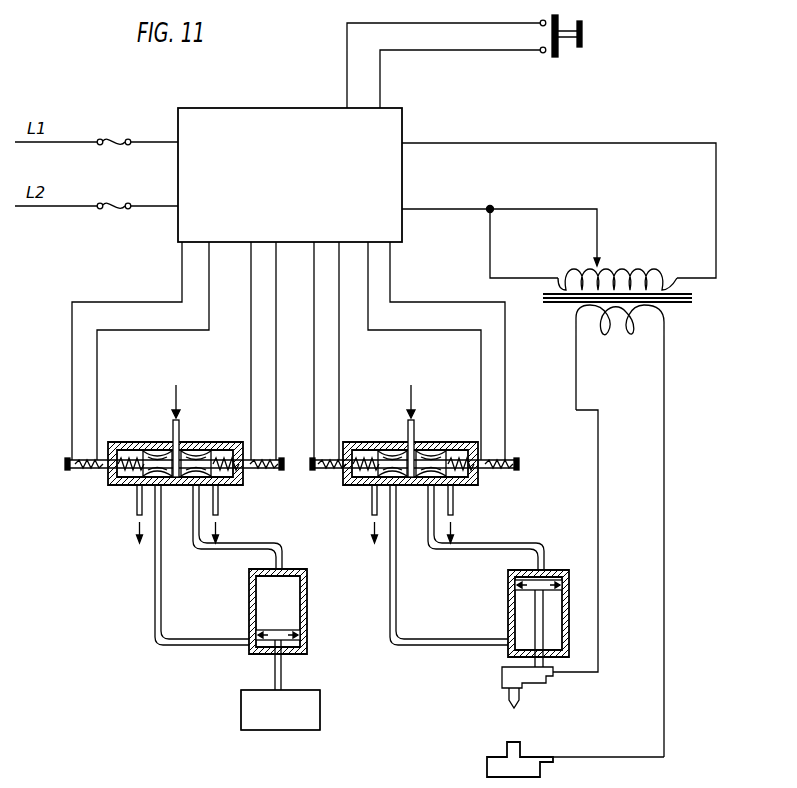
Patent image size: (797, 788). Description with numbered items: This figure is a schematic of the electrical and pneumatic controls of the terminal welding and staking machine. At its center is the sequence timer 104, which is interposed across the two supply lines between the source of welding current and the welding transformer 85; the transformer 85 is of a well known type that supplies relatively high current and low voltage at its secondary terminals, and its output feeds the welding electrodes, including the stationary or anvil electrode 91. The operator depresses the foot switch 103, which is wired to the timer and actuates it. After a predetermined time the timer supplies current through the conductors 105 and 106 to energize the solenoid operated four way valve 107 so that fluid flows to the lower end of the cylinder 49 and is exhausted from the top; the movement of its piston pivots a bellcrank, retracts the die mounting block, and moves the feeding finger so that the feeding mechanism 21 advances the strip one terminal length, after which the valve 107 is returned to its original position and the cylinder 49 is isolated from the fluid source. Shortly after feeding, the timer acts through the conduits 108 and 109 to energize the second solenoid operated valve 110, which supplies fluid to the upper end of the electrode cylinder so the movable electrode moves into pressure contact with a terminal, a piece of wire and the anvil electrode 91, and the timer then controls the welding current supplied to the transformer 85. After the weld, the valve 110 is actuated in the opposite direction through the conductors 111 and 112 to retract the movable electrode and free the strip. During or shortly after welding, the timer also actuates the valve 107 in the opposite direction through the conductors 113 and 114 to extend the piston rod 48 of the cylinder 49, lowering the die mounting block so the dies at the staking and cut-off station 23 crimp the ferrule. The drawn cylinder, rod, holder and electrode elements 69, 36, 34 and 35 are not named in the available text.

The sequence timer 104 is at (279, 118).
The foot switch 103 is at (558, 57).
The transformer 85 is at (708, 298).
The conductor 105 is at (251, 362).
The conductor 106 is at (276, 412).
The conduit 108 is at (314, 348).
The conduit 109 is at (339, 412).
The conductor 111 is at (481, 394).
The conductor 112 is at (505, 448).
The conductor 113 is at (97, 412).
The conductor 114 is at (72, 391).
The solenoid operated four way valve 107 is at (130, 484).
The solenoid operated valve 110 is at (472, 486).
The cylinder 49 is at (307, 606).
The piston rod 48 is at (283, 690).
The staking and cut-off station 23 is at (270, 723).
The feeding mechanism 21 is at (313, 723).
The air cylinder 69 is at (572, 556).
The piston rod 36 is at (508, 663).
The electrode holder 34 is at (502, 680).
The electrode 35 is at (517, 702).
The anvil electrode 91 is at (507, 748).